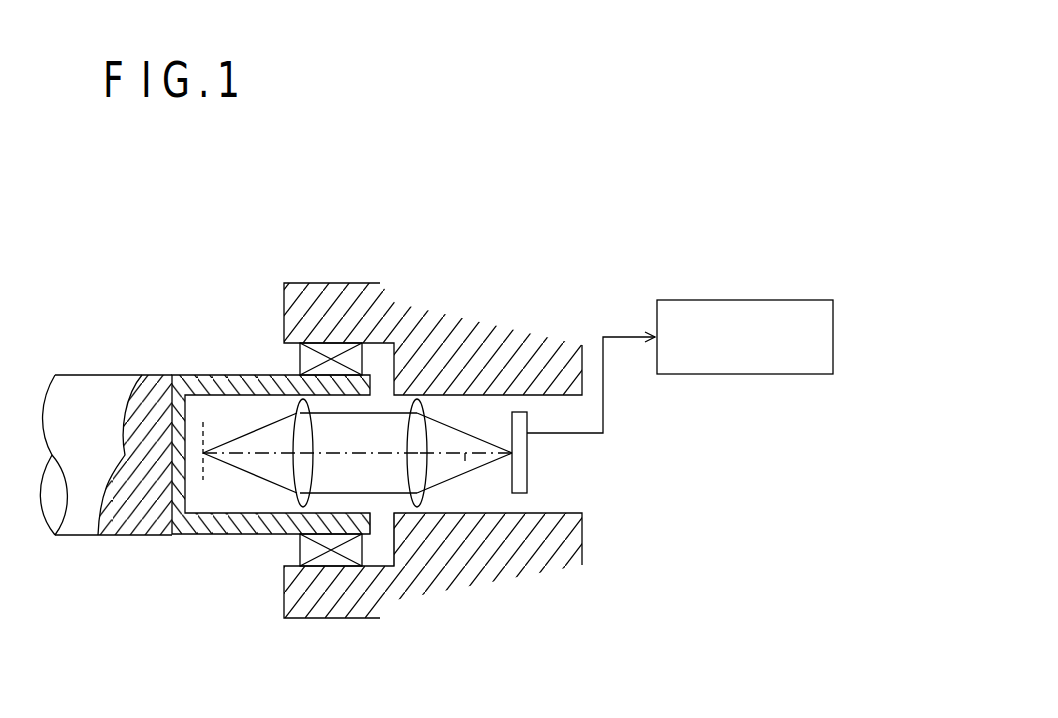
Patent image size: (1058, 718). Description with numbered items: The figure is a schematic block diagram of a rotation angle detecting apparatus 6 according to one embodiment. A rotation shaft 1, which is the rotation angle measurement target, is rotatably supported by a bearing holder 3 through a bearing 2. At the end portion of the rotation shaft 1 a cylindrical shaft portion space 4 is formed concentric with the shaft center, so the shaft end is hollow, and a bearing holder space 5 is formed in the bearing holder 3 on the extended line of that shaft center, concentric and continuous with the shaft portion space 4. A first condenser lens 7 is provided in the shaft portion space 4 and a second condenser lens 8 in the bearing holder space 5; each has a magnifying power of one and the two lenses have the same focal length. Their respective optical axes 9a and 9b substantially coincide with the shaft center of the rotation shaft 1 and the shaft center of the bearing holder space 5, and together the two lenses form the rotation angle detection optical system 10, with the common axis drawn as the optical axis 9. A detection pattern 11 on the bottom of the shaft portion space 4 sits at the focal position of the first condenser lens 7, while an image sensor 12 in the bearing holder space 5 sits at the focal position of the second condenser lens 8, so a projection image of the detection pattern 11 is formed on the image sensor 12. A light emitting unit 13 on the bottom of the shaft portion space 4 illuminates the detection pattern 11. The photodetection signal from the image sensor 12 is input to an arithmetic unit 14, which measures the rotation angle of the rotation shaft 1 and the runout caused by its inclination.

The rotation shaft 1 is at (93, 373).
The bearing 2 is at (366, 362).
The bearing holder 3 is at (373, 297).
The shaft portion space 4 is at (222, 490).
The bearing holder space 5 is at (473, 413).
The rotation angle detecting apparatus 6 is at (265, 308).
The first condenser lens 7 is at (280, 415).
The second condenser lens 8 is at (430, 468).
The optical axis 9 is at (373, 452).
The optical axis 9a is at (252, 457).
The optical axis 9b is at (465, 457).
The rotation angle detection optical system 10 is at (380, 514).
The detection pattern 11 is at (216, 440).
The image sensor 12 is at (512, 425).
The light emitting unit 13 is at (197, 485).
The arithmetic unit 14 is at (725, 300).